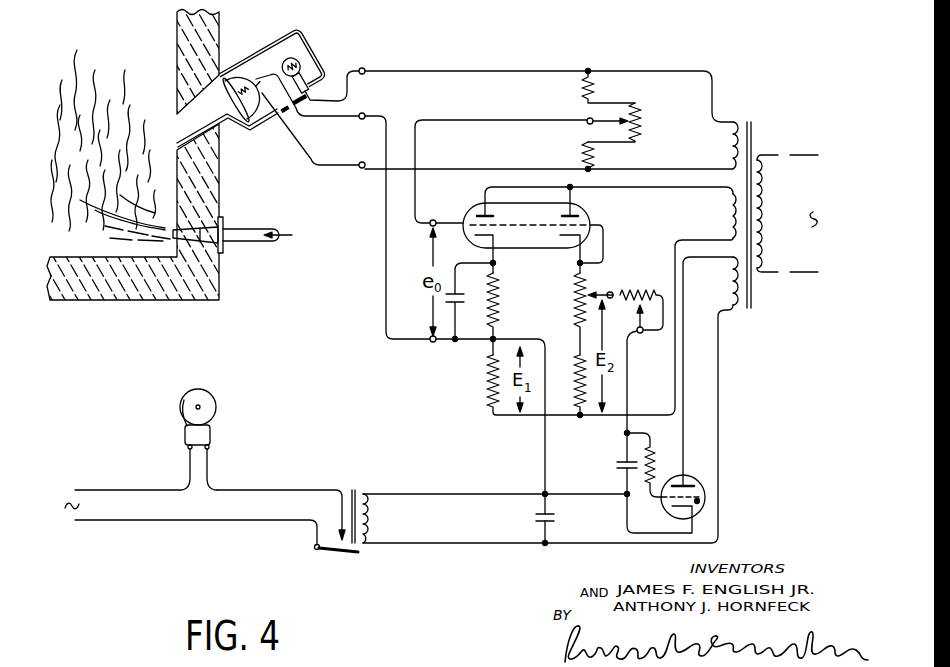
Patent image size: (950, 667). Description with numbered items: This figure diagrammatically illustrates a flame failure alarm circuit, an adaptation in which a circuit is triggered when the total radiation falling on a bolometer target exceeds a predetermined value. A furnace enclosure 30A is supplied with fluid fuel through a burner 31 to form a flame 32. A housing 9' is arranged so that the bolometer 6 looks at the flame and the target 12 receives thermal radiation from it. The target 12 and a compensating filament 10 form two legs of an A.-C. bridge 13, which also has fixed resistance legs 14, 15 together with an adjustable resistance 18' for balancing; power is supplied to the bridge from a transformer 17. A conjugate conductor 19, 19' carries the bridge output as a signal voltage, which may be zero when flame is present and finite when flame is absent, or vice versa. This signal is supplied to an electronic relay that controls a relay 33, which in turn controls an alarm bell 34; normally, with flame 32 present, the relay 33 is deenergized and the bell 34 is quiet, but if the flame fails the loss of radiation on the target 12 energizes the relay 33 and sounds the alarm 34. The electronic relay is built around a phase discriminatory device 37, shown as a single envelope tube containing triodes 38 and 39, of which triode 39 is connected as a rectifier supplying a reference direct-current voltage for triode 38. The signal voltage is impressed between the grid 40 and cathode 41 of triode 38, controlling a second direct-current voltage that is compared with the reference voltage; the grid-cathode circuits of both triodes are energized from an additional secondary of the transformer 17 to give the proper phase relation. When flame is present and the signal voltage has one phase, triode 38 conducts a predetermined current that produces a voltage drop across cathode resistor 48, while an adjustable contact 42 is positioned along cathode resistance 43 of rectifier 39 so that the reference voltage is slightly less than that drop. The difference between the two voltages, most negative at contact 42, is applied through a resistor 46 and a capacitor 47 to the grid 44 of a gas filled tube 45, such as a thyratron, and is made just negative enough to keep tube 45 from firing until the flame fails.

The bolometer 6 is at (276, 117).
The housing 9' is at (275, 70).
The compensating filament 10 is at (298, 57).
The target 12 is at (243, 91).
The A.-C. bridge 13 is at (502, 158).
The fixed resistance leg 14 is at (597, 90).
The fixed resistance leg 15 is at (597, 155).
The transformer 17 is at (782, 133).
The potentiometer 18' is at (636, 122).
The conjugate conductor 19 is at (501, 173).
The conjugate conductor 19' is at (447, 329).
The furnace enclosure 30A is at (135, 300).
The burner 31 is at (254, 241).
The flame 32 is at (112, 144).
The relay 33 is at (367, 486).
The alarm bell 34 is at (212, 431).
The phase discriminatory device 37 is at (517, 250).
The triode 38 is at (473, 203).
The triode 39 is at (612, 213).
The grid 40 is at (503, 222).
The cathode 41 is at (497, 239).
The adjustable contact 42 is at (600, 293).
The cathode resistance 43 is at (569, 299).
The grid 44 is at (697, 479).
The gas filled tube 45 is at (667, 513).
The resistor 46 is at (656, 469).
The capacitor 47 is at (616, 467).
The cathode resistor 48 is at (483, 380).